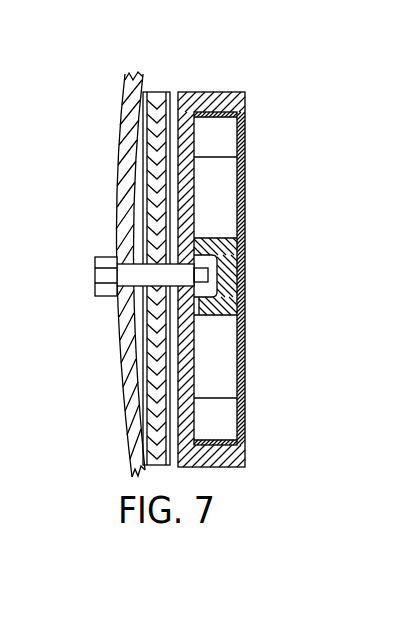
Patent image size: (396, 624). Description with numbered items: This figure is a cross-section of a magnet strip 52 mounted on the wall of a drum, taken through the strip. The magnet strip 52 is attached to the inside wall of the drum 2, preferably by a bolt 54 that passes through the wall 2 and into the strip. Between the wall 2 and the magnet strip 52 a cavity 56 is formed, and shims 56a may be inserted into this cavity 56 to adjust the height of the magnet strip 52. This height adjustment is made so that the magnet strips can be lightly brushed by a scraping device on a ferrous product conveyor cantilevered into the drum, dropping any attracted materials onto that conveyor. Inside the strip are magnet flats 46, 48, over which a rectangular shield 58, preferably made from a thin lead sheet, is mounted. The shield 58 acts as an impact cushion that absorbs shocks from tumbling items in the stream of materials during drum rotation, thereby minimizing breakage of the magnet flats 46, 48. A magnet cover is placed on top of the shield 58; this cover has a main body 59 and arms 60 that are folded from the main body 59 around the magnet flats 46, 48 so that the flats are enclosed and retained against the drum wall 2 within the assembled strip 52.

The drum wall 2 is at (127, 84).
The cavity 56 is at (122, 214).
The shims 56a is at (163, 92).
The magnet strip 52 is at (208, 79).
The rectangular shield 58 is at (243, 160).
The main body 59 is at (248, 212).
The magnet flat 46 is at (240, 240).
The magnet flat 48 is at (238, 331).
The arms 60 is at (247, 452).
The bolt 54 is at (93, 280).